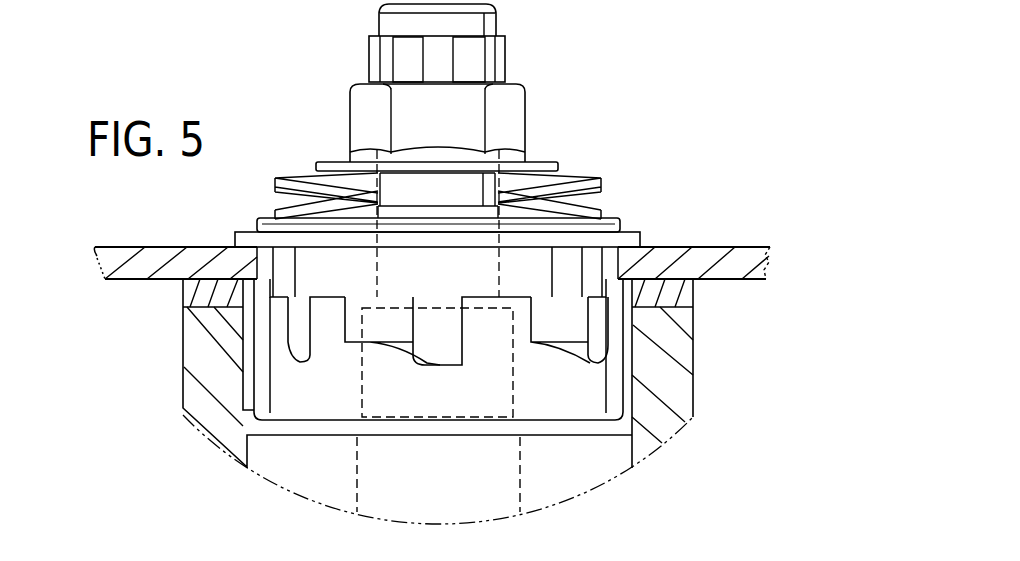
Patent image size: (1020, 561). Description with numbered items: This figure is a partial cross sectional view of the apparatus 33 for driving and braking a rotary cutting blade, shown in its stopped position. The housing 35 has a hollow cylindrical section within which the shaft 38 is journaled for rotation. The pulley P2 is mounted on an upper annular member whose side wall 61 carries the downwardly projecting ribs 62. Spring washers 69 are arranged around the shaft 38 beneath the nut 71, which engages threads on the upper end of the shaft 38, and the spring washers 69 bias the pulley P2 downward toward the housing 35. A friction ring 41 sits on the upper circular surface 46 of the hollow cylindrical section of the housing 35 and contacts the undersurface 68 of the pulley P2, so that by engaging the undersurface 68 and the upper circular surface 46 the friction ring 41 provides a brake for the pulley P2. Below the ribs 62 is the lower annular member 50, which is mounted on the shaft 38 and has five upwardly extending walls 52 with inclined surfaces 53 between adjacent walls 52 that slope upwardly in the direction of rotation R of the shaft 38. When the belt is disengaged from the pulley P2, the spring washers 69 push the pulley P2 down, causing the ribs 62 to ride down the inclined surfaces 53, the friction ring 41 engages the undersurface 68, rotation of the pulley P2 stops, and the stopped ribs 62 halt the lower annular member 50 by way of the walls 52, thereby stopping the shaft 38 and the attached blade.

The nut 71 is at (524, 58).
The spring washers 69 is at (614, 186).
The apparatus 33 is at (738, 134).
The pulley P2 is at (755, 253).
The side wall 61 is at (118, 292).
The undersurface 68 is at (760, 288).
The housing 35 is at (688, 394).
The friction ring 41 is at (188, 292).
The lower annular member 50 is at (320, 405).
The upper circular surface 46 is at (200, 308).
The ribs 62 is at (298, 336).
The inclined surfaces 53 is at (395, 360).
The upwardly extending walls 52 is at (332, 322).
The direction of rotation R is at (370, 466).
The shaft 38 is at (530, 482).